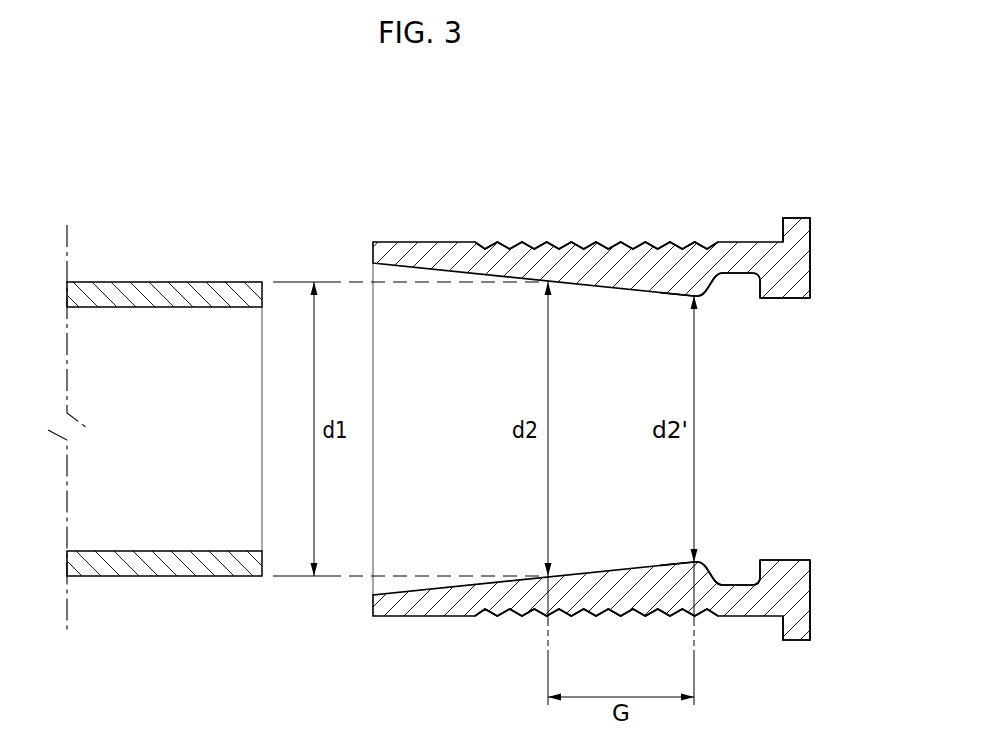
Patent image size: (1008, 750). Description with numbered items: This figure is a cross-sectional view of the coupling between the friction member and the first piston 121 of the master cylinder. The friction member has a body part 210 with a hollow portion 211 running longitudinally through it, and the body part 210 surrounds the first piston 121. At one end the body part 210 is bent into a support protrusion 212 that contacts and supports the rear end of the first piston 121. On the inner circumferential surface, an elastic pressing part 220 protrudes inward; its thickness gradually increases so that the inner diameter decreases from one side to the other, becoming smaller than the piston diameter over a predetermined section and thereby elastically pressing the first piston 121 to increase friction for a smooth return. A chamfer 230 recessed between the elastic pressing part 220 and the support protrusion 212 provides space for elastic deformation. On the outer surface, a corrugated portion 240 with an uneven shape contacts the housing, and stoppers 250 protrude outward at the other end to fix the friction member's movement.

The first piston 121 is at (163, 566).
The body part 210 is at (428, 250).
The hollow portion 211 is at (436, 390).
The support protrusion 212 is at (783, 300).
The elastic pressing part 220 is at (685, 293).
The chamfer 230 is at (746, 284).
The corrugated portion 240 is at (567, 226).
The stoppers 250 is at (797, 218).